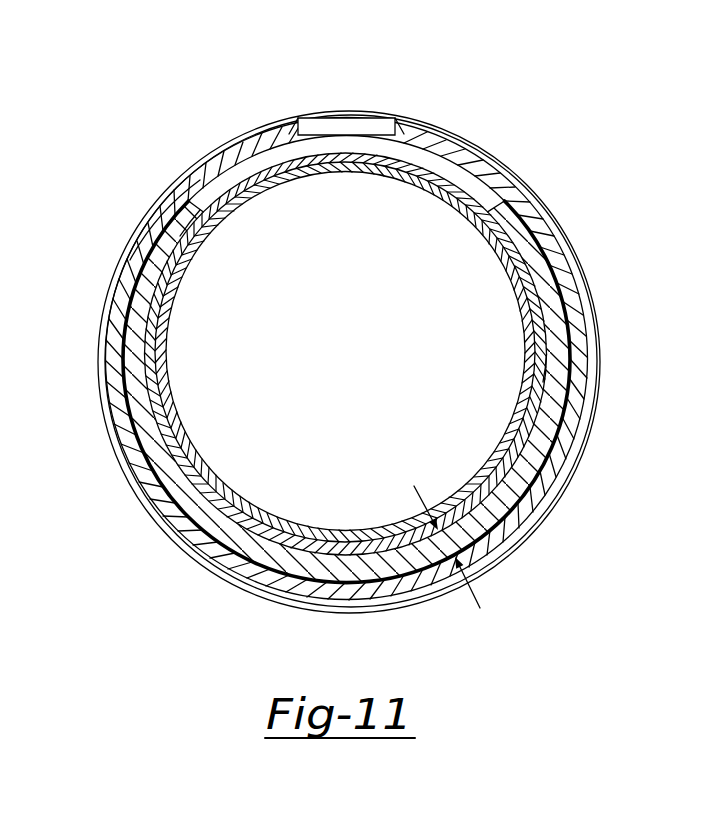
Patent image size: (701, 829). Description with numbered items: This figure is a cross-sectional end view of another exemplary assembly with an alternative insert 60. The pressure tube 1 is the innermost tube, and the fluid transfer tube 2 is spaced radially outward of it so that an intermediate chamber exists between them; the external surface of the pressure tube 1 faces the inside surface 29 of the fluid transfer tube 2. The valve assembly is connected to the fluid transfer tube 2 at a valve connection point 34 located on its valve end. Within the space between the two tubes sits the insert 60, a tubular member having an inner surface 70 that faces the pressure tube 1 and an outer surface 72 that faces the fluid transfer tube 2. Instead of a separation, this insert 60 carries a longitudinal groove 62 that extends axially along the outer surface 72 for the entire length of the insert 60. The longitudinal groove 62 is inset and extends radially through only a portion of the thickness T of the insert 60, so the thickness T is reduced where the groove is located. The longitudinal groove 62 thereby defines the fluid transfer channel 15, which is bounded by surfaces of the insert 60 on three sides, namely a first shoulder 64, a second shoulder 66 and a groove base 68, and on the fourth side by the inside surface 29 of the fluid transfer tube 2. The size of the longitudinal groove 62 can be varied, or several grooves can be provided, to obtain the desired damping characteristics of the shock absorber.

The pressure tube 1 is at (212, 467).
The fluid transfer tube 2 is at (118, 238).
The fluid transfer channel 15 is at (272, 160).
The inside surface 29 is at (458, 173).
The valve connection point 34 is at (401, 133).
The insert 60 is at (548, 412).
The longitudinal groove 62 is at (432, 146).
The first shoulder 64 is at (182, 214).
The second shoulder 66 is at (505, 212).
The groove base 68 is at (231, 188).
The inner surface 70 is at (538, 346).
The outer surface 72 is at (566, 282).
The thickness T is at (420, 490).